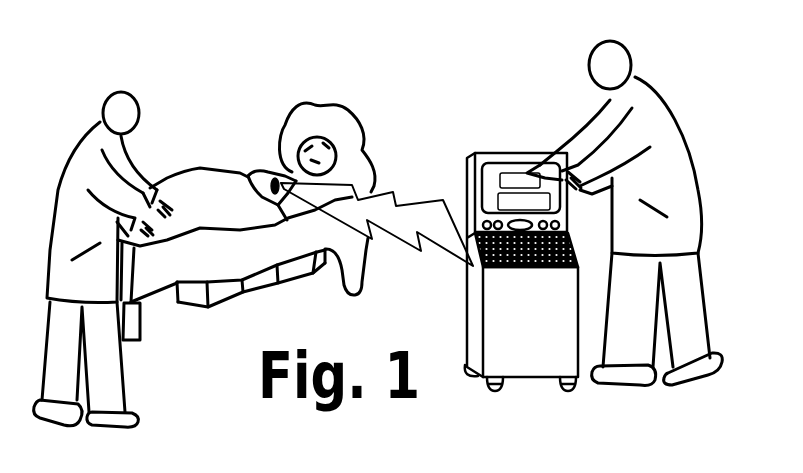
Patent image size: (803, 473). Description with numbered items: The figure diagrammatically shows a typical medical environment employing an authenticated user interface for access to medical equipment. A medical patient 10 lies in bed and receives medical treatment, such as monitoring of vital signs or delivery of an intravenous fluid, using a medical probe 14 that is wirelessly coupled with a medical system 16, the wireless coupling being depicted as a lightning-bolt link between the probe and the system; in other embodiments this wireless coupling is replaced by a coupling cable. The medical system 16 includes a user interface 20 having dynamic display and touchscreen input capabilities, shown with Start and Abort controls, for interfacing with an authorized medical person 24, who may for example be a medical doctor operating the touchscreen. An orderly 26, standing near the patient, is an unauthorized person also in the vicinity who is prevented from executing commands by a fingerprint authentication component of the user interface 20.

The medical patient 10 is at (258, 180).
The medical probe 14 is at (275, 178).
The medical system 16 is at (467, 202).
The user interface 20 is at (550, 50).
The authorized medical person 24 is at (687, 163).
The orderly 26 is at (73, 157).